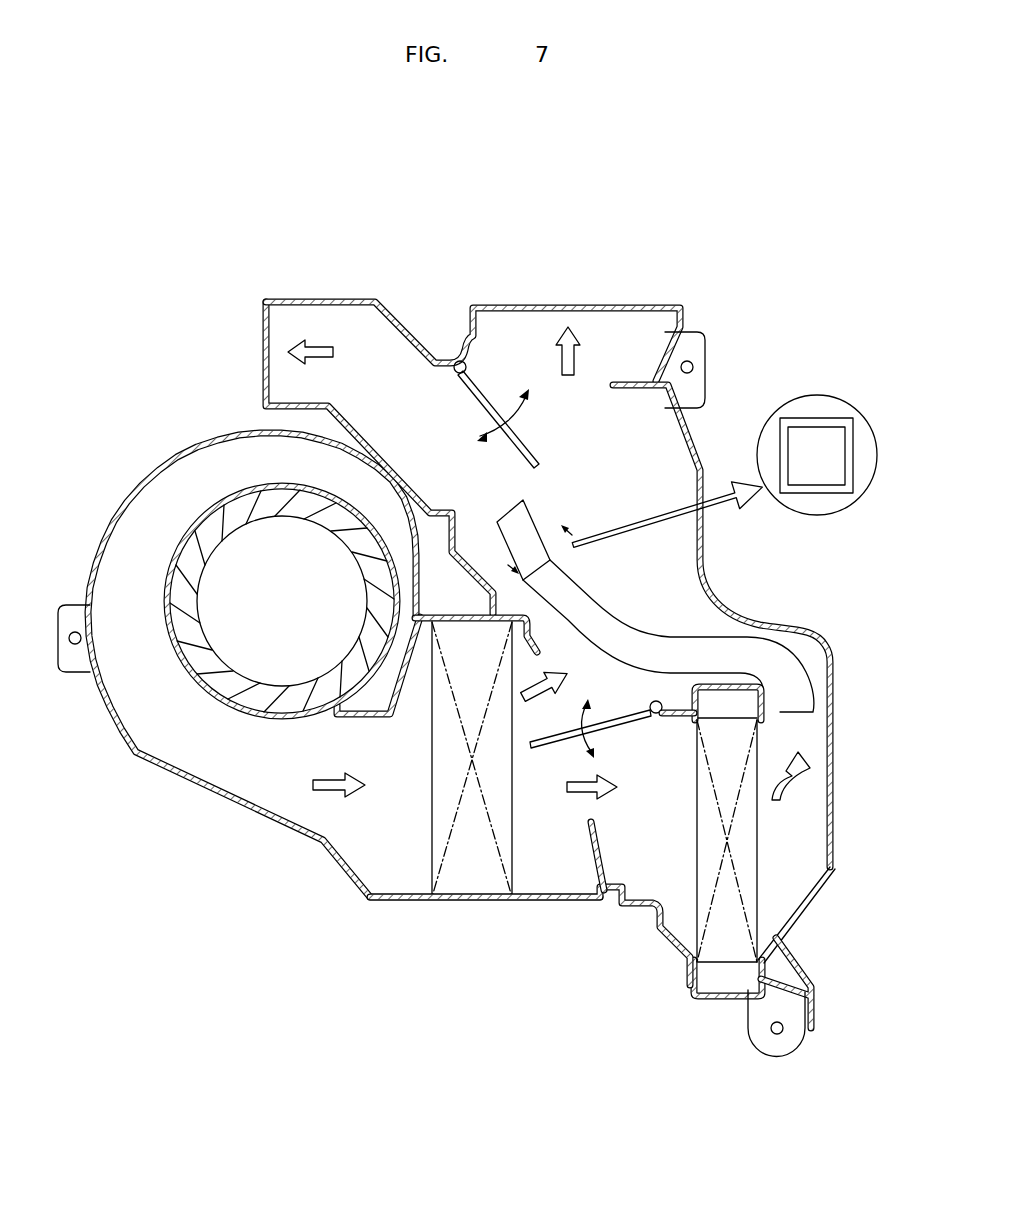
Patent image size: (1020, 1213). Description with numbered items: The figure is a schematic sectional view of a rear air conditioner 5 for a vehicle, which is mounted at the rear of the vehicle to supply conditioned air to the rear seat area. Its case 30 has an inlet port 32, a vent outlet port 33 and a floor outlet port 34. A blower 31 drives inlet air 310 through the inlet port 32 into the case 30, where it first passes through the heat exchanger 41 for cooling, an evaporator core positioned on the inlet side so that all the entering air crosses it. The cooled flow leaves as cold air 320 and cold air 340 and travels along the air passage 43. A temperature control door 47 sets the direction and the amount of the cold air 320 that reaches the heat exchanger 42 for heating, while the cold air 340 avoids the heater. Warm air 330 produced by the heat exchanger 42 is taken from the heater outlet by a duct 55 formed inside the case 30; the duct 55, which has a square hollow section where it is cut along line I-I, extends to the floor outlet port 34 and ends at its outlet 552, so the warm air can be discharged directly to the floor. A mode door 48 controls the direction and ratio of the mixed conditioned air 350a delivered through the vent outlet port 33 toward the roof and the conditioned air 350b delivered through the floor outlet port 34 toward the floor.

The rear air conditioner 5 is at (768, 266).
The case 30 is at (135, 755).
The blower 31 is at (205, 543).
The inlet port 32 is at (378, 800).
The vent outlet port 33 is at (647, 320).
The floor outlet port 34 is at (270, 342).
The heat exchanger for cooling 41 is at (465, 875).
The heat exchanger for heating 42 is at (723, 950).
The air passage 43 is at (528, 717).
The temperature control door 47 is at (610, 722).
The mode door 48 is at (490, 392).
The duct 55 is at (775, 657).
The inlet air 310 is at (323, 787).
The cold air 320 is at (567, 790).
The warm air 330 is at (793, 790).
The cold air 340 is at (523, 697).
The conditioned air 350a is at (573, 335).
The conditioned air 350b is at (320, 347).
The outlet of the duct 552 is at (507, 517).